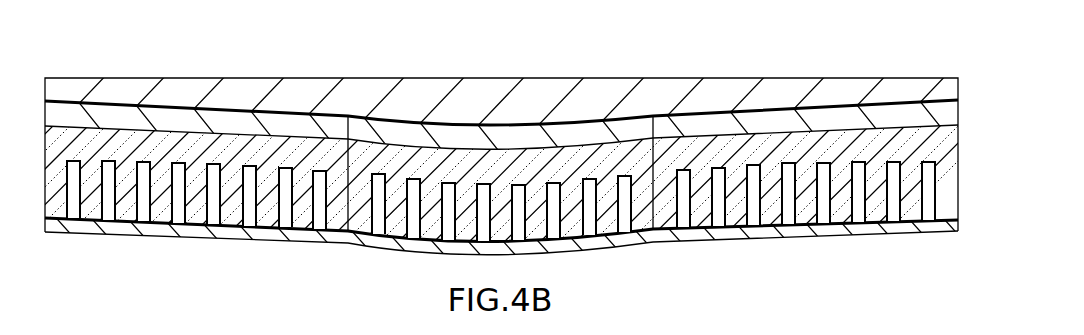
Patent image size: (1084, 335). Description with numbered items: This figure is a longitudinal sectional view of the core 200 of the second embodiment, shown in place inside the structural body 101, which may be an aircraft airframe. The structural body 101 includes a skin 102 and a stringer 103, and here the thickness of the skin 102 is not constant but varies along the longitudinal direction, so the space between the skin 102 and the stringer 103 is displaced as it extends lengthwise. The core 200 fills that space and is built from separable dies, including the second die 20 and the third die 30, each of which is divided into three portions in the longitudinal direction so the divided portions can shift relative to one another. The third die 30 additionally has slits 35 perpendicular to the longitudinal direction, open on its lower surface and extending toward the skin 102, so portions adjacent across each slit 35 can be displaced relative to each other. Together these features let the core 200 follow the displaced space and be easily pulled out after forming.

The structural body 101 is at (588, 78).
The skin 102 is at (204, 90).
The second die 20 is at (335, 110).
The core 200 is at (725, 104).
The third die 30 is at (399, 240).
The slits 35 is at (317, 229).
The stringer 103 is at (212, 238).